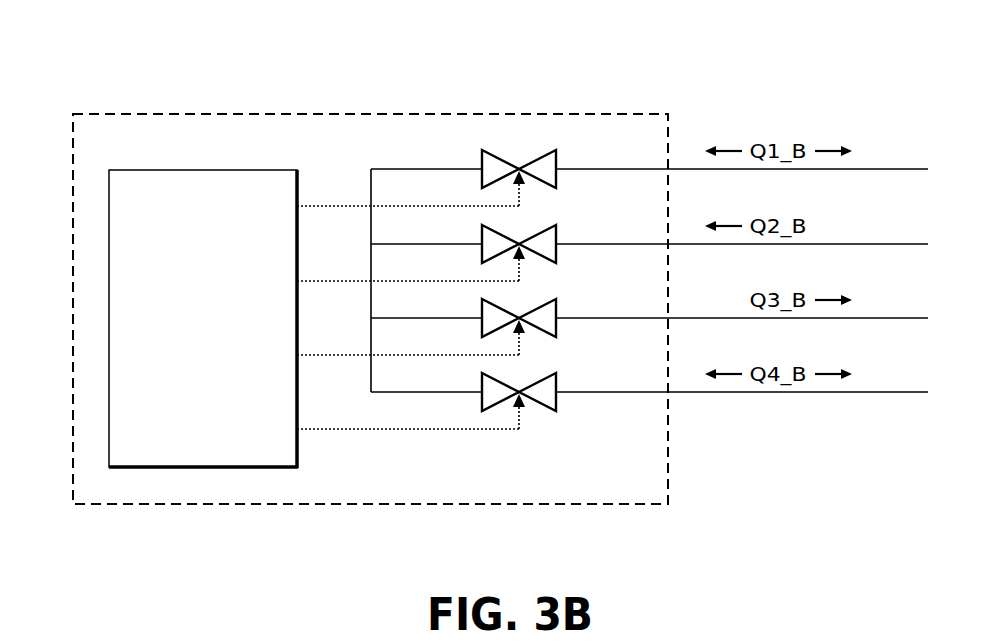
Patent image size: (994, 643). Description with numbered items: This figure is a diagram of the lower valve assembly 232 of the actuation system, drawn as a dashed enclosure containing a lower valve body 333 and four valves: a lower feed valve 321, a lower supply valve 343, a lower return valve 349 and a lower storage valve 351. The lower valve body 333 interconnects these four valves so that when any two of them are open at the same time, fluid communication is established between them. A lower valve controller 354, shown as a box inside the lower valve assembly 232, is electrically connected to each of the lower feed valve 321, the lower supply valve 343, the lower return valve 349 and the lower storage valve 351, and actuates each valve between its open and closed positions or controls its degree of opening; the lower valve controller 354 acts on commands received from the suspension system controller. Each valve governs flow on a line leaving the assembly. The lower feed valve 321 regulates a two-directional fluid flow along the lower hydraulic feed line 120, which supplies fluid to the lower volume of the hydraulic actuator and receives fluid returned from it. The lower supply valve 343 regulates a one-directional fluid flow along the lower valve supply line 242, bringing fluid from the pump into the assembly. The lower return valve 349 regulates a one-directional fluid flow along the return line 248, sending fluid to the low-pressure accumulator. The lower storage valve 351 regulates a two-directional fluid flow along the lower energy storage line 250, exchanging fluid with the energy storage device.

The lower valve assembly 232 is at (108, 71).
The lower valve controller 354 is at (257, 170).
The lower valve body 333 is at (446, 168).
The lower feed valve 321 is at (557, 152).
The lower supply valve 343 is at (557, 227).
The lower return valve 349 is at (557, 301).
The lower storage valve 351 is at (557, 375).
The lower hydraulic feed line 120 is at (890, 169).
The lower valve supply line 242 is at (890, 244).
The return line 248 is at (890, 318).
The lower energy storage line 250 is at (890, 392).